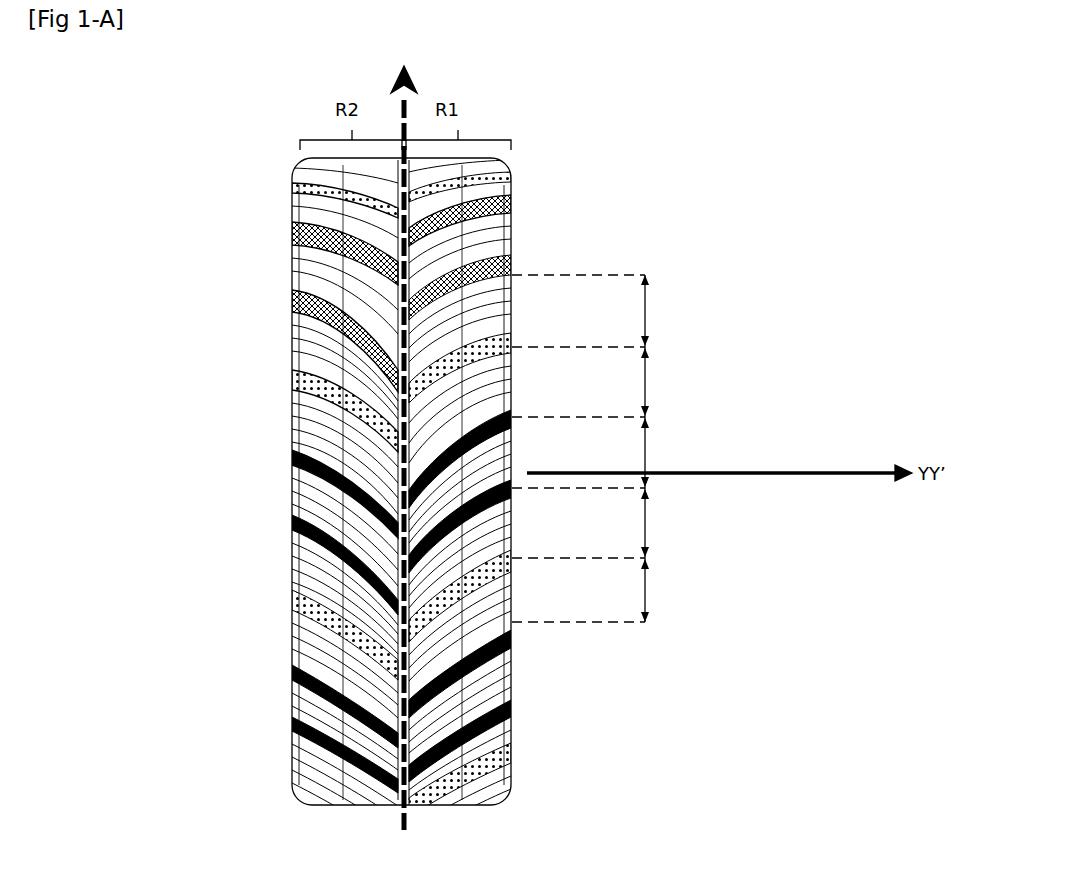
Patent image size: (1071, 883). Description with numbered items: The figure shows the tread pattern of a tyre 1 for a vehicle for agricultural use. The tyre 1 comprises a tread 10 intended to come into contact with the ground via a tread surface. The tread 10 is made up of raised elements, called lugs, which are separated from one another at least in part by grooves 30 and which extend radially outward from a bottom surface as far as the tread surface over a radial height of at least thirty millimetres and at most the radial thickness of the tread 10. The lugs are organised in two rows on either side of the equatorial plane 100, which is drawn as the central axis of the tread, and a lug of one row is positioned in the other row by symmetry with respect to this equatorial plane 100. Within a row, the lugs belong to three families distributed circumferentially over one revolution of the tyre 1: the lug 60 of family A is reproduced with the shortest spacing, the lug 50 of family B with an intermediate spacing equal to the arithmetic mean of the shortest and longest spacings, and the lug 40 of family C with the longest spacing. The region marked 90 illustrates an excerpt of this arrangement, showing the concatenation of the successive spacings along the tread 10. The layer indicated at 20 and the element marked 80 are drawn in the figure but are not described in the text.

The tyre 1 is at (282, 185).
The tread 10 is at (238, 234).
The first tread band 20 is at (292, 232).
The grooves 30 is at (295, 279).
The lug of family C 40 is at (296, 302).
The lug of family B 50 is at (293, 382).
The lug of family A 60 is at (292, 458).
The tread band on first half 80 is at (513, 209).
The arrangement excerpt of tread elements 90 is at (698, 276).
The equatorial plane 100 is at (414, 90).